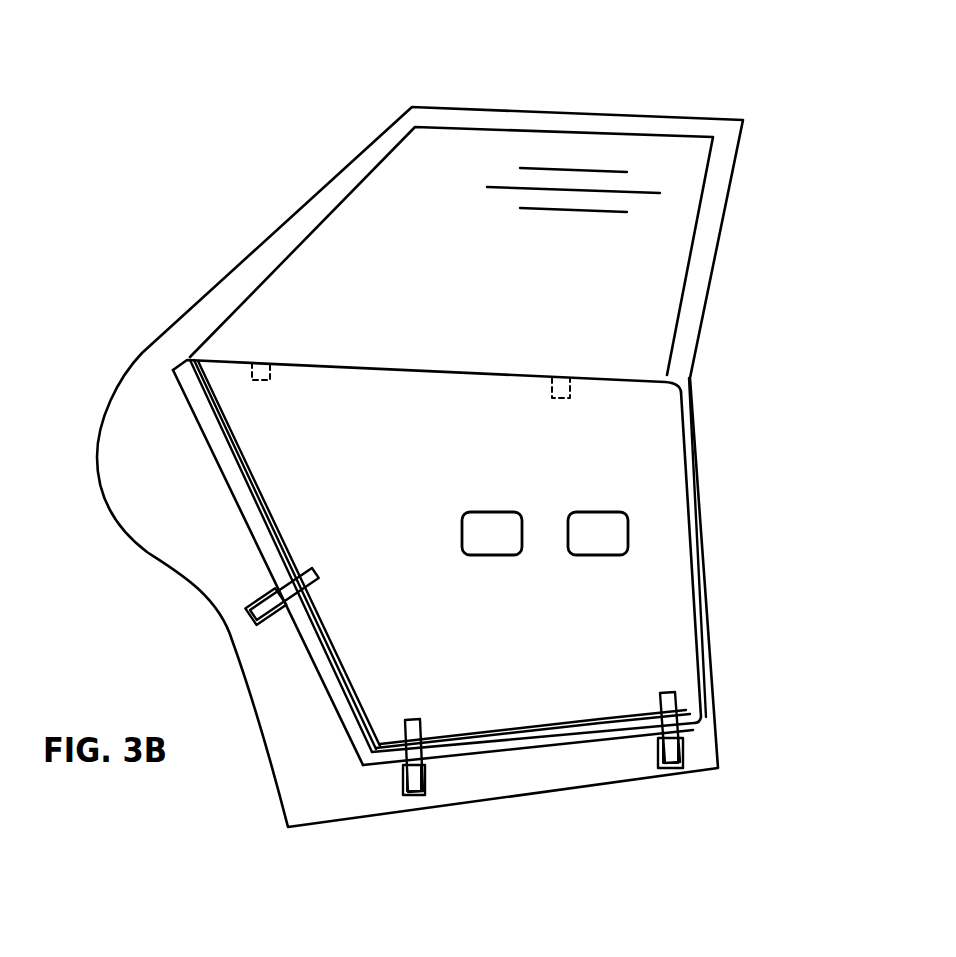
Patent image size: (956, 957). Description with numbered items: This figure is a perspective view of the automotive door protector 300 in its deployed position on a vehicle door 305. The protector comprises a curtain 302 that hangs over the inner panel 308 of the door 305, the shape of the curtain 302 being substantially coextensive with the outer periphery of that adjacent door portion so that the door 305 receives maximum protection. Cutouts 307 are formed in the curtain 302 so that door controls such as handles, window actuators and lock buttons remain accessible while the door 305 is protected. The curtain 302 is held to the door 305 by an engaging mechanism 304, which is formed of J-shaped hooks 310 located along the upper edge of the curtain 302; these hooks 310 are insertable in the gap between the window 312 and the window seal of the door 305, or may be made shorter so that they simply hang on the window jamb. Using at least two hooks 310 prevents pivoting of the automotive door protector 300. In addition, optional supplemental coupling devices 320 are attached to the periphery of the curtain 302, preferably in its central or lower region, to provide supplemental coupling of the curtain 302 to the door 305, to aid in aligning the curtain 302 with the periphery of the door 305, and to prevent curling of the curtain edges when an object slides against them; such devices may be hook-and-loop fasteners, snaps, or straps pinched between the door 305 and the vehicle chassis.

The automotive door protector 300 is at (463, 392).
The curtain 302 is at (643, 456).
The engaging mechanism 304 is at (350, 335).
The door 305 is at (609, 112).
The cutouts 307 is at (627, 532).
The inner panel 308 is at (268, 481).
The hooks 310 is at (651, 348).
The window 312 is at (388, 186).
The supplemental coupling devices 320 is at (675, 693).